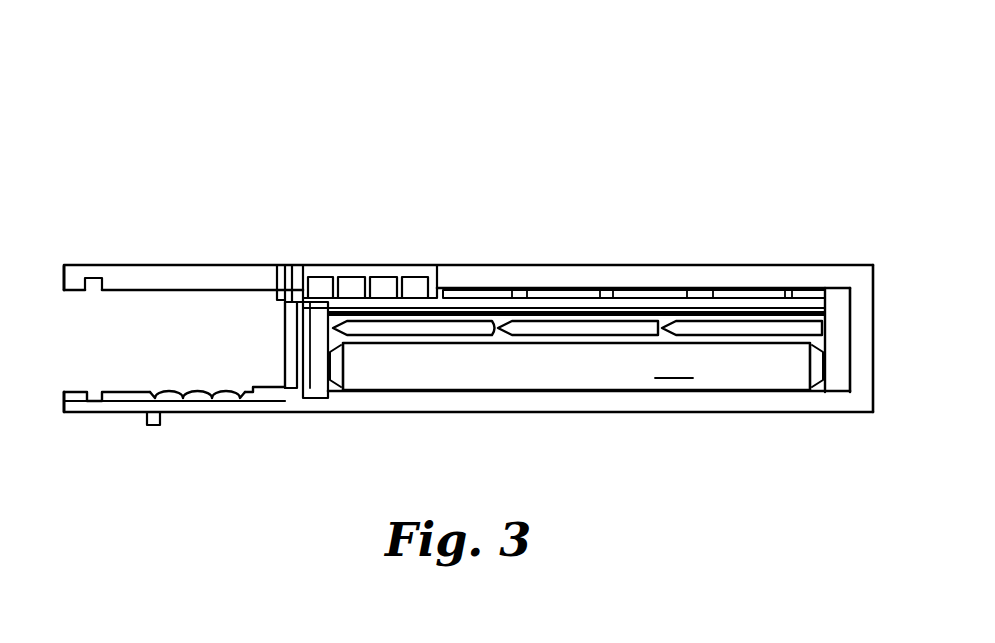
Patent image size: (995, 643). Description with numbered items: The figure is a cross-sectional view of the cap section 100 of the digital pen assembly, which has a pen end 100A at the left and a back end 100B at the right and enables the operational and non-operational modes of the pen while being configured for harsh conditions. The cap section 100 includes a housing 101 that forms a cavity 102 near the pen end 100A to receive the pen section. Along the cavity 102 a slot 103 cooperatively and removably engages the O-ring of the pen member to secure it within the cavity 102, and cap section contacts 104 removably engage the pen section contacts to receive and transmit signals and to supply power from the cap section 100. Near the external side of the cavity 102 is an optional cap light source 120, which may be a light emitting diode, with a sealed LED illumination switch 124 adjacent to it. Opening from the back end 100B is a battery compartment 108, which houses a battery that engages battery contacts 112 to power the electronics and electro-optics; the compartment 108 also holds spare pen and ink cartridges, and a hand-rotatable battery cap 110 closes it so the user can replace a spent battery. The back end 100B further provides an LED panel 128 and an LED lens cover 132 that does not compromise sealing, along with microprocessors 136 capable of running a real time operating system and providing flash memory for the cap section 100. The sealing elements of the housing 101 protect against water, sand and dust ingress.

The cap section 100 is at (130, 98).
The pen end 100A is at (66, 264).
The back end 100B is at (828, 272).
The housing 101 is at (176, 273).
The cavity 102 is at (58, 290).
The slot 103 is at (88, 404).
The cap section contacts 104 is at (232, 400).
The battery compartment 108 is at (820, 388).
The battery cap 110 is at (865, 402).
The battery contacts 112 is at (337, 408).
The cap light source 120 is at (72, 404).
The LED illumination switch 124 is at (150, 426).
The LED panel 128 is at (410, 284).
The LED lens cover 132 is at (348, 276).
The microprocessors 136 is at (747, 298).